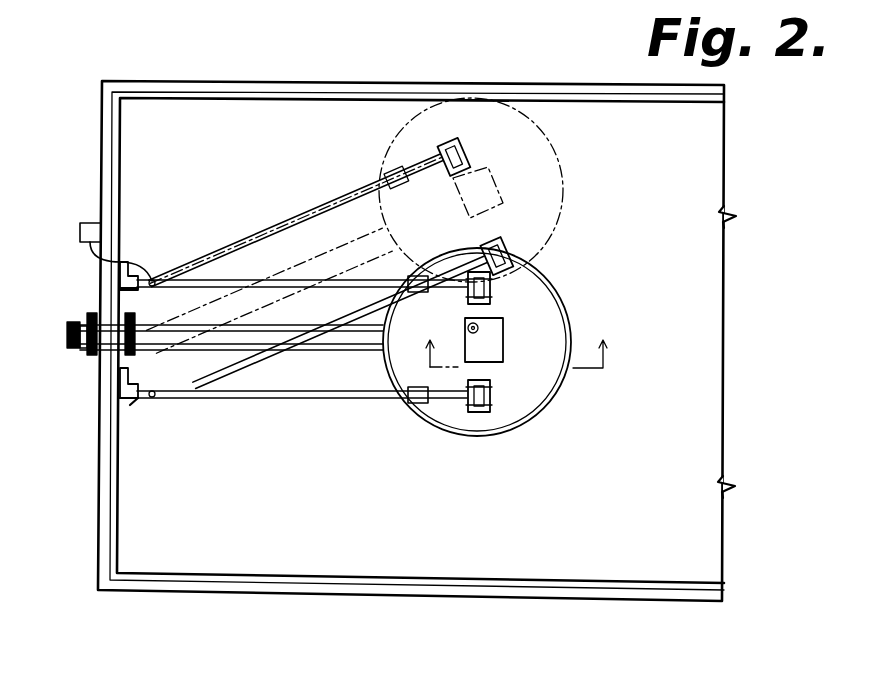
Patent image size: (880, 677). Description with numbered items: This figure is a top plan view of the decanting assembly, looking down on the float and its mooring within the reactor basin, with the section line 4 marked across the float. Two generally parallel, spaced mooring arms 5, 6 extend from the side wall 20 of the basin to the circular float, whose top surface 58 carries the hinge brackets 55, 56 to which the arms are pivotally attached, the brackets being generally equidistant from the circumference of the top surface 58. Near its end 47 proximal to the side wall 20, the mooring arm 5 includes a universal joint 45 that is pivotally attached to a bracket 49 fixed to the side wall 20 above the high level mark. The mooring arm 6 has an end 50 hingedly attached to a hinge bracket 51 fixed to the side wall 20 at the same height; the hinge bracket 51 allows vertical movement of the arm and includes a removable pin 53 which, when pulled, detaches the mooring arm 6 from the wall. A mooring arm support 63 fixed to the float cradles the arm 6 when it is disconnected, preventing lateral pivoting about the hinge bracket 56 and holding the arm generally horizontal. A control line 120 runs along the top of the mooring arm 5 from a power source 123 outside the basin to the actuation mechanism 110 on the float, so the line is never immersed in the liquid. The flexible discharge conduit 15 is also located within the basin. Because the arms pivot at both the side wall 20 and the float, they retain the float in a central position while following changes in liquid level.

The side wall 20 is at (99, 437).
The power source 123 is at (84, 224).
The flexible discharge conduit 15 is at (343, 241).
The universal joint 45 is at (118, 266).
The bracket 49 is at (122, 289).
The end 47 is at (154, 297).
The hinge bracket 51 is at (120, 371).
The removable pin 53 is at (131, 402).
The end 50 is at (151, 390).
The mooring arm 5 is at (232, 280).
The mooring arm 6 is at (237, 369).
The control line 120 is at (447, 297).
The mooring arm support 63 is at (418, 407).
The hinge bracket 55 is at (500, 295).
The hinge bracket 56 is at (492, 395).
The actuation mechanism 110 is at (504, 326).
The top surface 58 is at (560, 361).
The section line 4- 4 is at (516, 358).